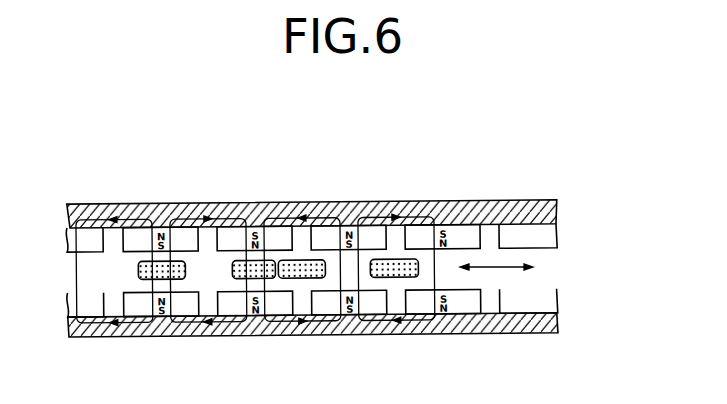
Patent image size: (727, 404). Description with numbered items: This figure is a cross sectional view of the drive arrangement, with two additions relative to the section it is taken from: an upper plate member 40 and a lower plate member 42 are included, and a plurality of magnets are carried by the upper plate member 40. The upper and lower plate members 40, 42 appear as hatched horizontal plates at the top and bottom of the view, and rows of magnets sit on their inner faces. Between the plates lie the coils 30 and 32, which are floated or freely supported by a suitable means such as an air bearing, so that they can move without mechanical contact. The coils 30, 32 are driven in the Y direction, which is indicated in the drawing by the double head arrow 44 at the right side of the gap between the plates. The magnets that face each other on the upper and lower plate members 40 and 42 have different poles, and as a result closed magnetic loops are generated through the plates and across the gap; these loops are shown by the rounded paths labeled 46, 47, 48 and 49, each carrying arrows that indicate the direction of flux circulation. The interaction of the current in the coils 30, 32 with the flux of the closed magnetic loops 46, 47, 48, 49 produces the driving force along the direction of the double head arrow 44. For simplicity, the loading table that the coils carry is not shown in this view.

The coil 30 is at (232, 270).
The coil 32 is at (372, 278).
The upper plate member 40 is at (498, 200).
The lower plate member 42 is at (476, 323).
The double head arrow 44 is at (510, 260).
The closed magnetic loop 46 is at (141, 221).
The closed magnetic loop 47 is at (234, 221).
The closed magnetic loop 48 is at (323, 216).
The closed magnetic loop 49 is at (418, 214).